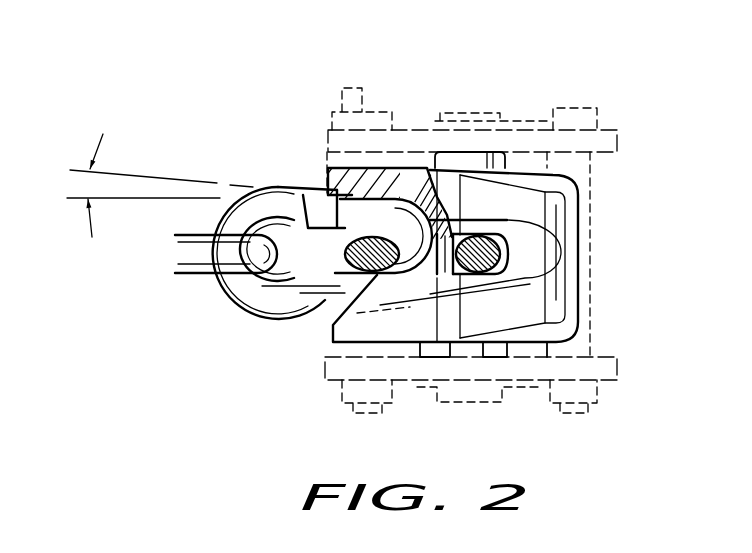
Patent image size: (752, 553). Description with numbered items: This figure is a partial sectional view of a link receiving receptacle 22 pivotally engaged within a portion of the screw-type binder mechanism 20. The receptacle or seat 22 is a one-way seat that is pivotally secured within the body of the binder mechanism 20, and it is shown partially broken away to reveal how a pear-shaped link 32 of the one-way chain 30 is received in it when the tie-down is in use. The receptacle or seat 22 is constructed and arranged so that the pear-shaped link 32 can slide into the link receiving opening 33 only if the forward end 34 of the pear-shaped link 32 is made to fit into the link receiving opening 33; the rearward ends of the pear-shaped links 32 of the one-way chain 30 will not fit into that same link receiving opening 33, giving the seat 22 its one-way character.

The screw-type binder mechanism 20 is at (382, 98).
The link receiving receptacle 22 is at (583, 217).
The one-way chain 30 is at (188, 277).
The pear-shaped link 32 is at (225, 298).
The link receiving opening 33 is at (335, 257).
The forward end 34 is at (397, 196).